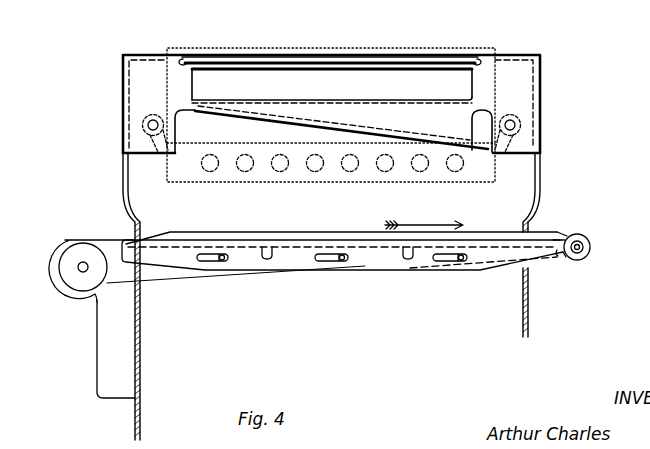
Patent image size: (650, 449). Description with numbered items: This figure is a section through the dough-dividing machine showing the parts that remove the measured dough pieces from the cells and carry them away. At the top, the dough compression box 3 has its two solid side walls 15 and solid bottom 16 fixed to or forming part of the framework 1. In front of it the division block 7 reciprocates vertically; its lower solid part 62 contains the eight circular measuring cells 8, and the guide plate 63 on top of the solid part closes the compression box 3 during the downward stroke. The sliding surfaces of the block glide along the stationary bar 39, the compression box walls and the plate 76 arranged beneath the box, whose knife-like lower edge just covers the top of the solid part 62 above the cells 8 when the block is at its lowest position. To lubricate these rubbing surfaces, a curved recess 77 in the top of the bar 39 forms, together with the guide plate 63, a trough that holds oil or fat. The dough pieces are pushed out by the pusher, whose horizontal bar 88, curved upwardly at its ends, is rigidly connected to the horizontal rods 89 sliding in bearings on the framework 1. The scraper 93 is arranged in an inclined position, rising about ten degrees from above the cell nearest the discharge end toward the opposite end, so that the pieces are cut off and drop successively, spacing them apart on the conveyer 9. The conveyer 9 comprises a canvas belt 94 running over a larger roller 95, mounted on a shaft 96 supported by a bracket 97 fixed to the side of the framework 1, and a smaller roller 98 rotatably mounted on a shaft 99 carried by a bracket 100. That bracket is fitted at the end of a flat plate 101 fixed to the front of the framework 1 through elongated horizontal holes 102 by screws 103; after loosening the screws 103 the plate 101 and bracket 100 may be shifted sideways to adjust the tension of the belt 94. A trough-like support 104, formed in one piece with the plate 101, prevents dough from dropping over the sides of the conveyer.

The framework 1 is at (123, 57).
The dough compression box 3 is at (332, 84).
The division block 7 is at (168, 170).
The measuring cells 8 is at (238, 175).
The conveyer 9 is at (424, 288).
The side walls 15 is at (192, 83).
The bottom 16 is at (446, 100).
The bar 39 is at (421, 55).
The lower solid part 62 is at (392, 175).
The guide plate 63 is at (342, 50).
The plate 76 is at (470, 107).
The recess 77 is at (221, 60).
The horizontal bar 88 is at (329, 173).
The horizontal rods 89 is at (142, 125).
The scraper 93 is at (262, 108).
The canvas belt 94 is at (280, 276).
The larger roller 95 is at (56, 285).
The shaft 96 is at (80, 272).
The bracket 97 is at (102, 357).
The smaller roller 98 is at (591, 243).
The shaft 99 is at (590, 253).
The bracket 100 is at (558, 256).
The flat plate 101 is at (362, 263).
The elongated horizontal holes 102 is at (210, 262).
The screws 103 is at (456, 262).
The trough-like support 104 is at (261, 230).